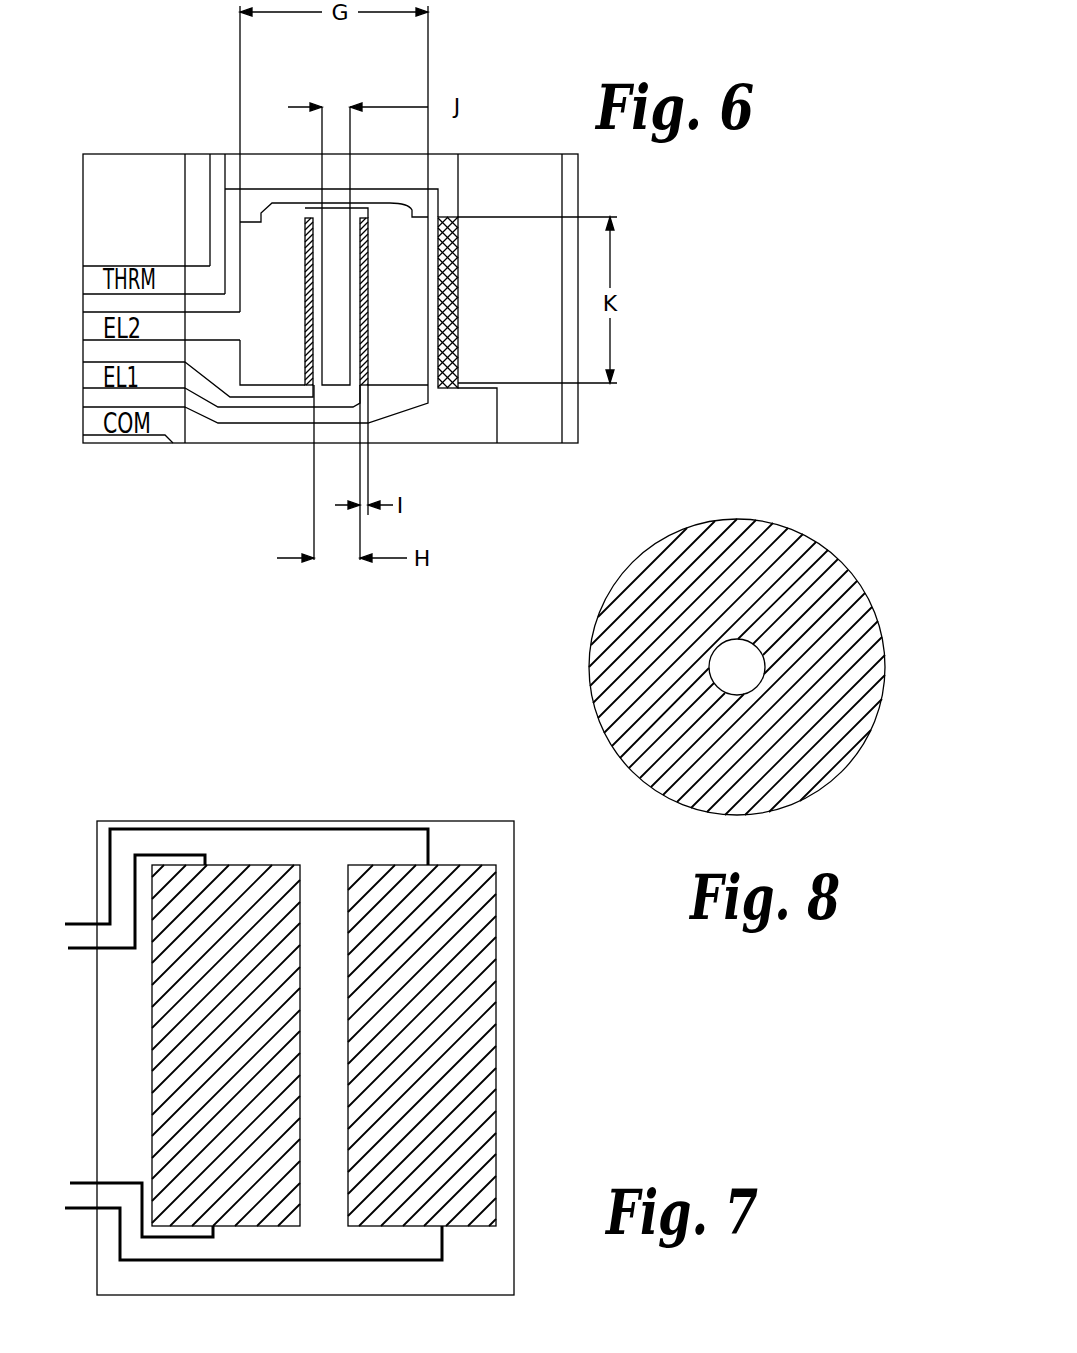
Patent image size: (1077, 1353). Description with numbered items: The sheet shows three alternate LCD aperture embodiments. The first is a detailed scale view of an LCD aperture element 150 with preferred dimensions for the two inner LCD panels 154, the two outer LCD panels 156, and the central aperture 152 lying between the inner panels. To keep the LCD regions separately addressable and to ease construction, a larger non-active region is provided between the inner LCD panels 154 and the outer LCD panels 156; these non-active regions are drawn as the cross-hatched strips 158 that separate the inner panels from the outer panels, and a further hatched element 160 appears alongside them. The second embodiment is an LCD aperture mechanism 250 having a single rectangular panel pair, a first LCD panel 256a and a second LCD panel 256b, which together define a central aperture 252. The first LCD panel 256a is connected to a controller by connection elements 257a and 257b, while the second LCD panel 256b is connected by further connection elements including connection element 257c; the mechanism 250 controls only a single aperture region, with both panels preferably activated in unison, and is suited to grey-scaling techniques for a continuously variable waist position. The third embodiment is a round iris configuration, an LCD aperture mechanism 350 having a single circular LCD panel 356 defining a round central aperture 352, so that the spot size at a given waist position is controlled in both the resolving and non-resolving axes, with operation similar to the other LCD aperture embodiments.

In FIG. 6, the LCD aperture element 150 is at (497, 110).
In FIG. 6, the central aperture 152 is at (342, 286).
In FIG. 6, the inner LCD panels 154 is at (318, 334).
In FIG. 6, the outer LCD panels 156 is at (291, 375).
In FIG. 6, the cross-hatched strips 158 is at (305, 256).
In FIG. 6, the thermal element 160 is at (458, 253).
In FIG. 7, the LCD aperture mechanism 250 is at (362, 775).
In FIG. 7, the central aperture 252 is at (300, 1049).
In FIG. 7, the first LCD panel 256a is at (175, 1041).
In FIG. 7, the second LCD panel 256b is at (490, 1070).
In FIG. 7, the connection element 257a is at (197, 855).
In FIG. 7, the connection element 257b is at (231, 828).
In FIG. 7, the connection element 257c is at (187, 1263).
In FIG. 8, the LCD aperture mechanism 350 is at (708, 494).
In FIG. 8, the central aperture 352 is at (752, 640).
In FIG. 8, the circular LCD panel 356 is at (685, 565).